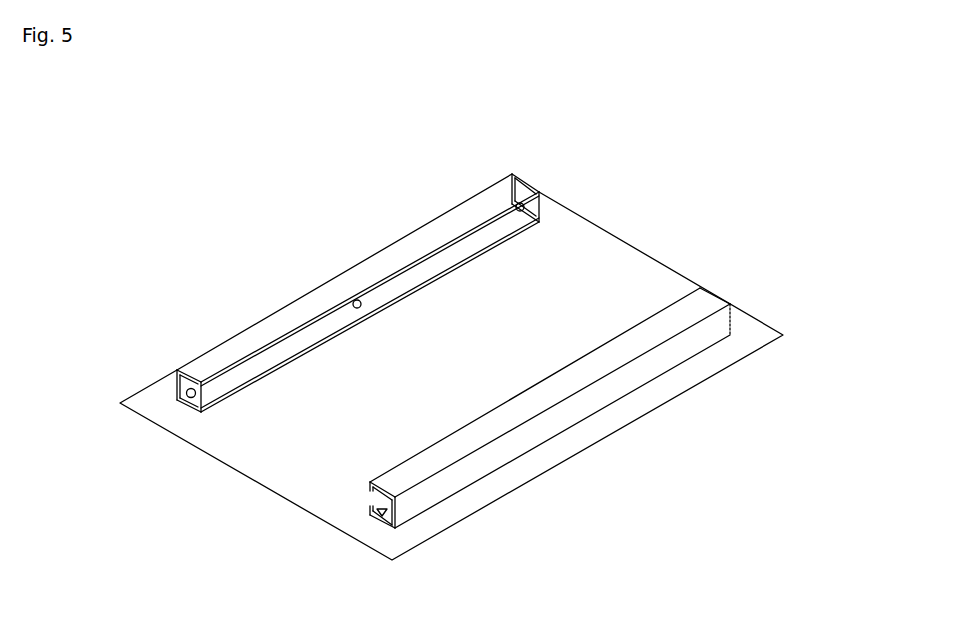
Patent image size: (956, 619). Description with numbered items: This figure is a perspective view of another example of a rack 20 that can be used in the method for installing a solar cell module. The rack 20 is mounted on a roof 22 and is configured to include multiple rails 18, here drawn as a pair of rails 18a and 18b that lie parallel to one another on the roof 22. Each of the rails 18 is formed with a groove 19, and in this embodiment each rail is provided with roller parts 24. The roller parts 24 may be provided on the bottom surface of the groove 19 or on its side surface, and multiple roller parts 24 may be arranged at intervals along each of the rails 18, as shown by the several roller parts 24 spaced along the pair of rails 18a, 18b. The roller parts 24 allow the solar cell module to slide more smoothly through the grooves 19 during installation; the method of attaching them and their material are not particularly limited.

The rails 18 is at (480, 341).
The rail 18a is at (353, 332).
The rail 18b is at (581, 375).
The groove 19 is at (242, 372).
The rack 20 is at (705, 305).
The roof 22 is at (745, 338).
The roller parts 24 is at (530, 215).